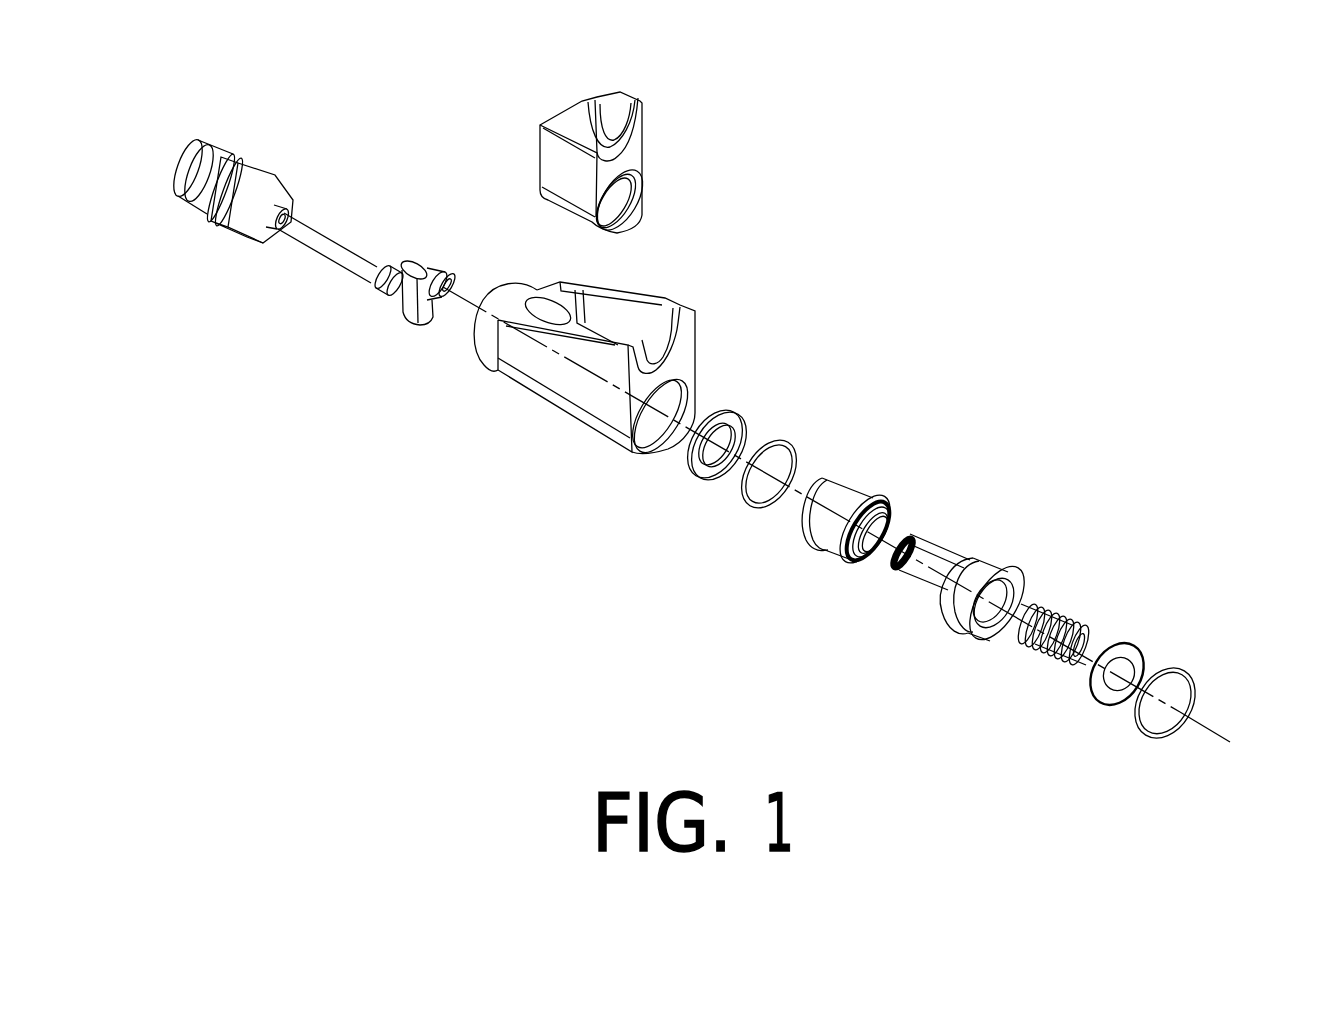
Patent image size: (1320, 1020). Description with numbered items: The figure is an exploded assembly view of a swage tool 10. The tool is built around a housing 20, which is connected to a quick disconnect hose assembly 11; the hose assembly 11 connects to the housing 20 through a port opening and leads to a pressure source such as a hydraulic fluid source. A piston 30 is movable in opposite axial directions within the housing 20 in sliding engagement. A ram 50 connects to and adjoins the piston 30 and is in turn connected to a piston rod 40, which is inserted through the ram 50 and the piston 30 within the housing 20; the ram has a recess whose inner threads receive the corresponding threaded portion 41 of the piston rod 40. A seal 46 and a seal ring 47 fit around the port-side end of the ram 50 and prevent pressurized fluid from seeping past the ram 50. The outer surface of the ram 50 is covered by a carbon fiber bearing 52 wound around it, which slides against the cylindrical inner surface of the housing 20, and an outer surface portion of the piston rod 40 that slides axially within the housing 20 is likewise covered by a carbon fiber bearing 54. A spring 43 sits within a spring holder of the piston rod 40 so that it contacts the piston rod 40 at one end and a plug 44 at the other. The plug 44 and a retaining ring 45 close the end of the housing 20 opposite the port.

The swage tool 10 is at (709, 418).
The quick disconnect hose assembly 11 is at (265, 262).
The housing 20 is at (693, 298).
The piston 30 is at (655, 87).
The piston rod 40 is at (972, 582).
The threaded portion 41 is at (915, 533).
The spring 43 is at (1082, 615).
The plug 44 is at (1150, 652).
The retaining ring 45 is at (1130, 740).
The seal 46 is at (690, 478).
The seal ring 47 is at (798, 440).
The ram 50 is at (824, 520).
The carbon fiber bearing 52 is at (867, 483).
The carbon fiber bearing 54 is at (1012, 563).